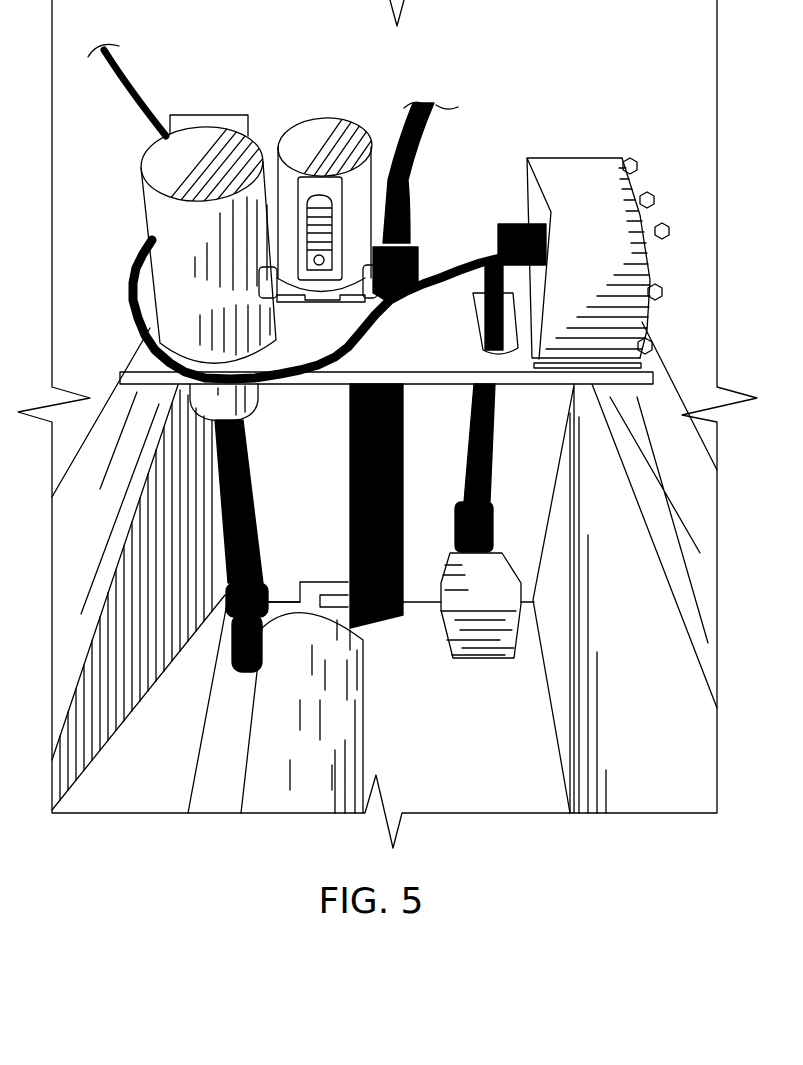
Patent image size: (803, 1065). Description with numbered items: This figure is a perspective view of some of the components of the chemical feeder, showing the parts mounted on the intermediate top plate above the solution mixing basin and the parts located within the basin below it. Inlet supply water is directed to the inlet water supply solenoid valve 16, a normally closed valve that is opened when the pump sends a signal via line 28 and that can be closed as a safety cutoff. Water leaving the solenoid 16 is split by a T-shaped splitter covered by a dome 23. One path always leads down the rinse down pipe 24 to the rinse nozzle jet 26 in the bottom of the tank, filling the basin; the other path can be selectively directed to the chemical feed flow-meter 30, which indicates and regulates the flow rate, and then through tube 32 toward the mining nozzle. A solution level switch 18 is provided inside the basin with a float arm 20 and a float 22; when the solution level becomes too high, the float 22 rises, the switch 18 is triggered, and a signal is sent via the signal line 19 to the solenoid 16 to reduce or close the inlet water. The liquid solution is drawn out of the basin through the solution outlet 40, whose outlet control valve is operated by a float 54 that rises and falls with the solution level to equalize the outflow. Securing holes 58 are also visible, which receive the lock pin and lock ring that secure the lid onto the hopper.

The inlet water supply solenoid valve 16 is at (209, 112).
The solution level switch 18 is at (581, 168).
The signal line 19 is at (139, 268).
The float arm 20 is at (495, 436).
The float 22 is at (481, 594).
The dome 23 is at (195, 160).
The rinse down pipe 24 is at (250, 478).
The rinse nozzle jet 26 is at (231, 680).
The line 28 is at (127, 83).
The chemical feed flow-meter 30 is at (316, 143).
The tube 32 is at (427, 134).
The solution outlet 40 is at (348, 428).
The float 54 is at (263, 735).
The securing holes 58 is at (316, 583).